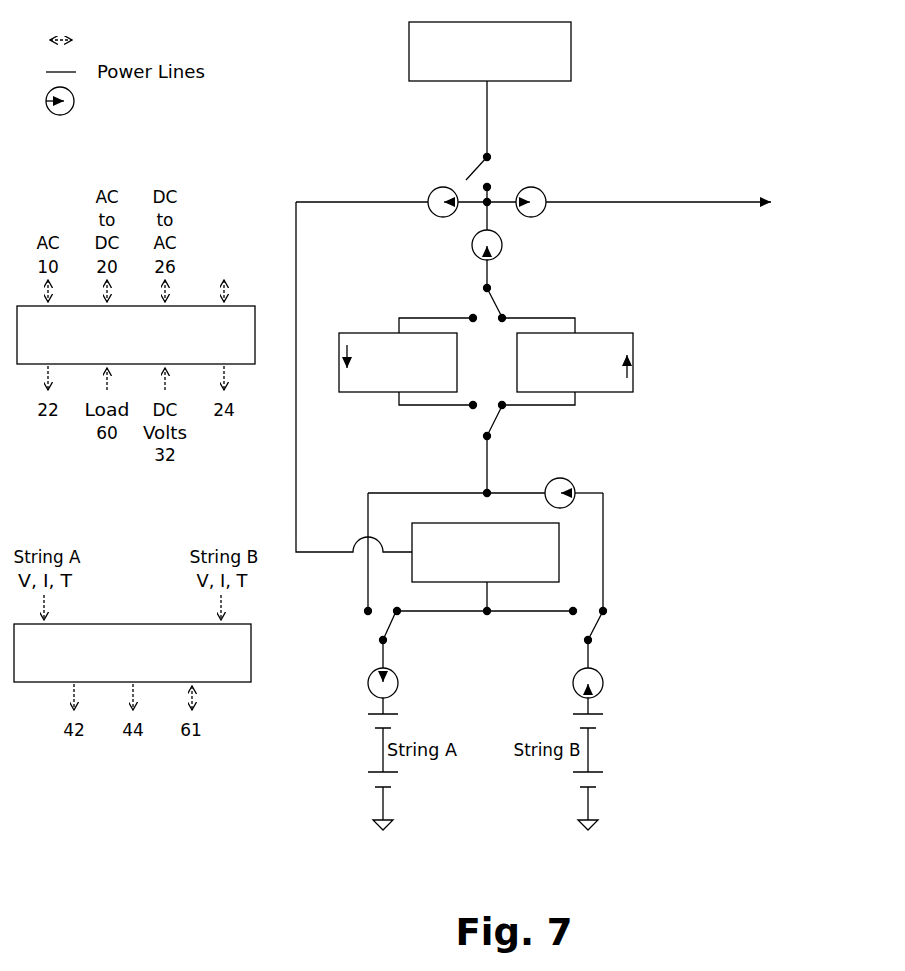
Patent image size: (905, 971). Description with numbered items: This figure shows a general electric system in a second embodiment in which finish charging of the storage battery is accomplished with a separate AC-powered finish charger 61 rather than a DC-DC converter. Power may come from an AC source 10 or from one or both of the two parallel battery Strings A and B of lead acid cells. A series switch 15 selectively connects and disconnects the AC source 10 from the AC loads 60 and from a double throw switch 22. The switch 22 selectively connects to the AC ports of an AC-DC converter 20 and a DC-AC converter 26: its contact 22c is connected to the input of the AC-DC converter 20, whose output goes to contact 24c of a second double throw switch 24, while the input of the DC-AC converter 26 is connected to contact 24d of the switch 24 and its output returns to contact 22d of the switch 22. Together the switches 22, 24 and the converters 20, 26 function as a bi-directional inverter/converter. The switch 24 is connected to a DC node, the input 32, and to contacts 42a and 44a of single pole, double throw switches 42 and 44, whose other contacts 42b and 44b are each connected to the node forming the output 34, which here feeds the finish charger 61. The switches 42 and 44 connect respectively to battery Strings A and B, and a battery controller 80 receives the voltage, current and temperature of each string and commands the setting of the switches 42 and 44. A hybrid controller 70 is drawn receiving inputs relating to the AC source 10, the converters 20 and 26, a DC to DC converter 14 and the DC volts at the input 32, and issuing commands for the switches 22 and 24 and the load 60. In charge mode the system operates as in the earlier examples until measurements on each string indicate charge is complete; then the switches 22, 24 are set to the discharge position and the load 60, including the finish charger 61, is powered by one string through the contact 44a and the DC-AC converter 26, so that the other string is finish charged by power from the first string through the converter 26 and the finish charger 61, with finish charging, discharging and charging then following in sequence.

The AC source 10 is at (490, 51).
The DC to DC converter 14 is at (224, 244).
The series switch 15 is at (464, 172).
The AC-DC converter 20 is at (406, 361).
The double throw switch 22 is at (505, 300).
The contact of switch 22 22c is at (444, 309).
The contact of switch 22 22d is at (531, 309).
The double throw switch 24 is at (479, 422).
The contact of switch 24 24c is at (454, 414).
The contact of switch 24 24d is at (518, 415).
The DC-AC converter 26 is at (567, 361).
The input 32 is at (485, 472).
The output 34 is at (485, 598).
The single pole, double throw switch 42 is at (377, 637).
The contact of switch 42 42a is at (347, 554).
The contact of switch 42 42b is at (418, 622).
The single pole, double throw switch 44 is at (600, 639).
The contact of switch 44 44a is at (625, 554).
The contact of switch 44 44b is at (552, 622).
The AC loads 60 is at (697, 203).
The finish charger 61 is at (435, 560).
The hybrid controller 70 is at (136, 335).
The battery controller 80 is at (132, 653).